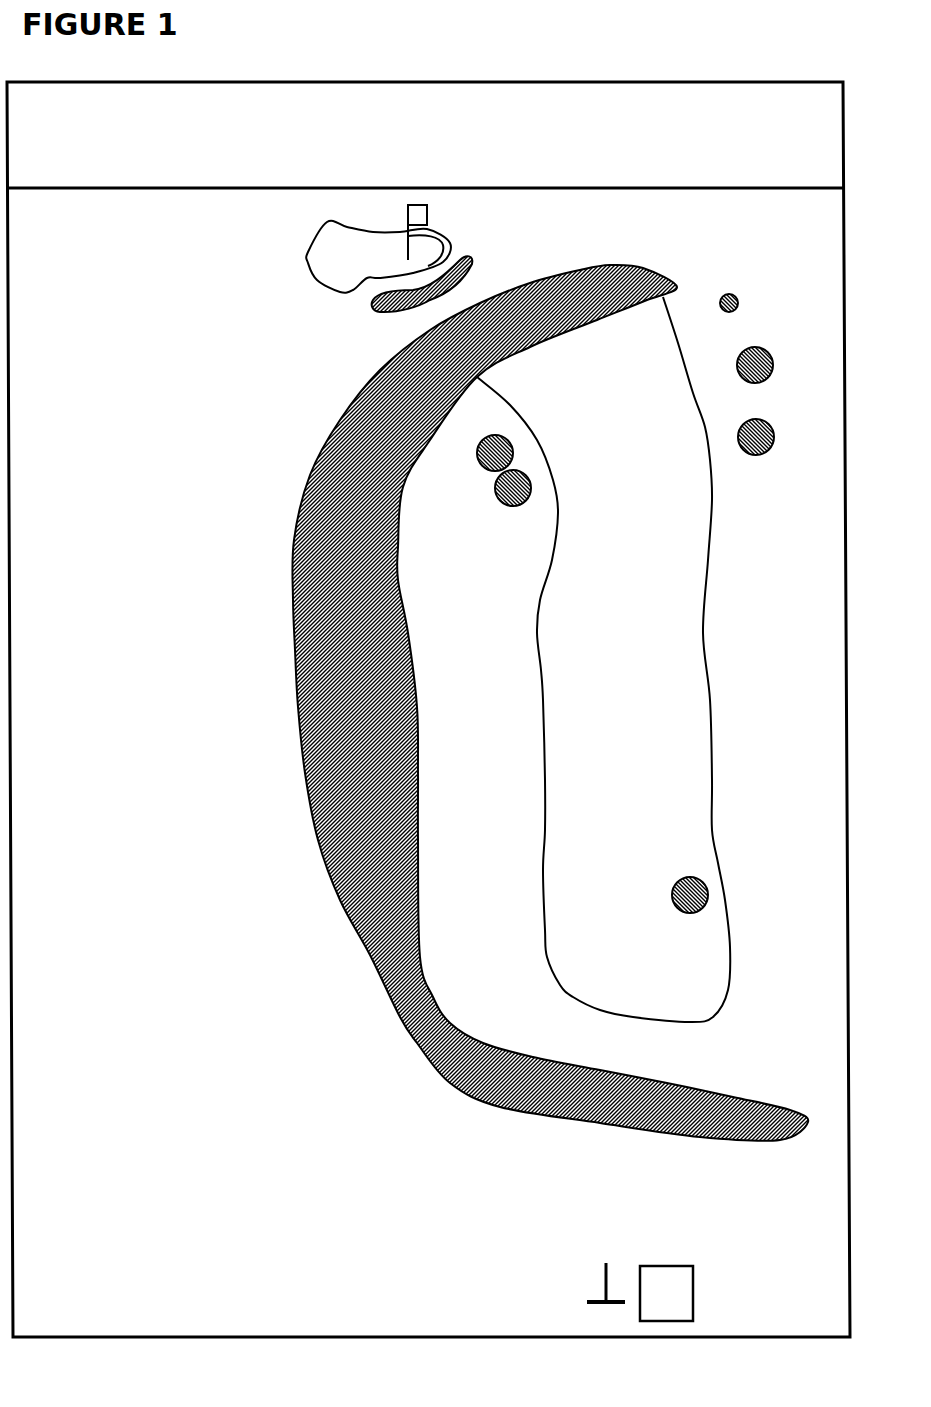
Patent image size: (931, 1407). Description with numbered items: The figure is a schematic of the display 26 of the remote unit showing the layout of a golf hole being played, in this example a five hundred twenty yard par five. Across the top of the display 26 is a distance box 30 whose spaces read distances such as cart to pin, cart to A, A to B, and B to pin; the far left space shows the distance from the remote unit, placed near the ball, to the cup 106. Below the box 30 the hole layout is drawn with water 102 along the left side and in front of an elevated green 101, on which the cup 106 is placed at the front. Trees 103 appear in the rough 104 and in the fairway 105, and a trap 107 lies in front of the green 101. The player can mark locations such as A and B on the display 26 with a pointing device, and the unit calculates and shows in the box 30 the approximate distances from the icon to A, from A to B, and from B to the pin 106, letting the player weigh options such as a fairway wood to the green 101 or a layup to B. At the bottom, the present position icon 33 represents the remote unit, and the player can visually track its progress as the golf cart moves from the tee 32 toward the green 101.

The display 26 is at (160, 1332).
The distance box 30 is at (722, 78).
The tee 32 is at (693, 1310).
The present position icon 33 is at (600, 1292).
The green 101 is at (308, 262).
The water 102 is at (298, 707).
The trees 103 is at (774, 436).
The rough 104 is at (574, 699).
The fairway 105 is at (657, 659).
The cup 106 is at (430, 233).
The trap 107 is at (463, 290).